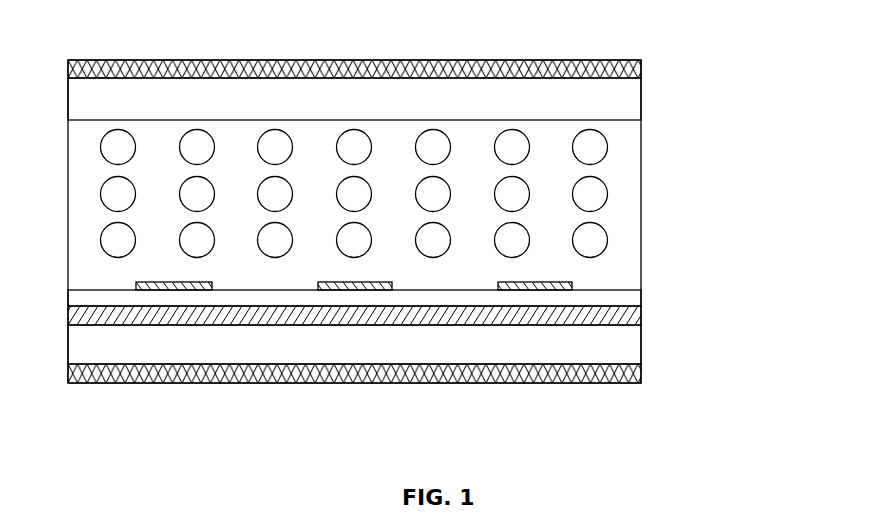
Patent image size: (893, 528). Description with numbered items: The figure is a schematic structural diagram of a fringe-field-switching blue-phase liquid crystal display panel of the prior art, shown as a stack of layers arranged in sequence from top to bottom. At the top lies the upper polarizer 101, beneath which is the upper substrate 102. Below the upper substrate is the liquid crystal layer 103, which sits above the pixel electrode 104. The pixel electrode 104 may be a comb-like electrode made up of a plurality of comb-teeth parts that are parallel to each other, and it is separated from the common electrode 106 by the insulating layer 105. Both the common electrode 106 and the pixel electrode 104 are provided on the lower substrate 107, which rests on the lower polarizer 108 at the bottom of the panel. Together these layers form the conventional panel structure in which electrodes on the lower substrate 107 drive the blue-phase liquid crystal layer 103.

The upper polarizer 101 is at (641, 65).
The upper substrate 102 is at (641, 101).
The liquid crystal layer 103 is at (608, 147).
The pixel electrode 104 is at (572, 284).
The insulating layer 105 is at (641, 296).
The common electrode 106 is at (641, 317).
The lower substrate 107 is at (641, 347).
The lower polarizer 108 is at (641, 373).